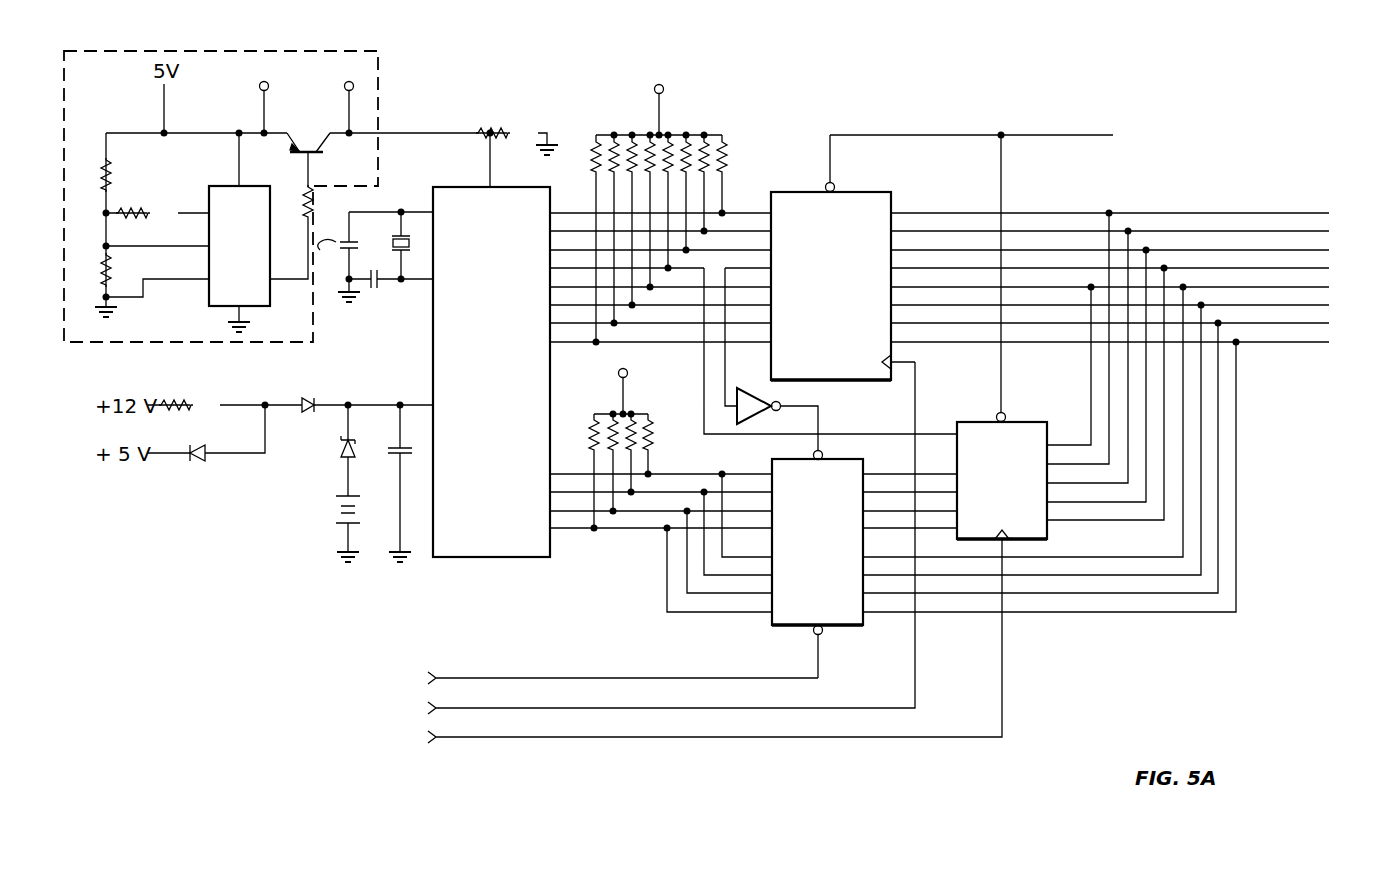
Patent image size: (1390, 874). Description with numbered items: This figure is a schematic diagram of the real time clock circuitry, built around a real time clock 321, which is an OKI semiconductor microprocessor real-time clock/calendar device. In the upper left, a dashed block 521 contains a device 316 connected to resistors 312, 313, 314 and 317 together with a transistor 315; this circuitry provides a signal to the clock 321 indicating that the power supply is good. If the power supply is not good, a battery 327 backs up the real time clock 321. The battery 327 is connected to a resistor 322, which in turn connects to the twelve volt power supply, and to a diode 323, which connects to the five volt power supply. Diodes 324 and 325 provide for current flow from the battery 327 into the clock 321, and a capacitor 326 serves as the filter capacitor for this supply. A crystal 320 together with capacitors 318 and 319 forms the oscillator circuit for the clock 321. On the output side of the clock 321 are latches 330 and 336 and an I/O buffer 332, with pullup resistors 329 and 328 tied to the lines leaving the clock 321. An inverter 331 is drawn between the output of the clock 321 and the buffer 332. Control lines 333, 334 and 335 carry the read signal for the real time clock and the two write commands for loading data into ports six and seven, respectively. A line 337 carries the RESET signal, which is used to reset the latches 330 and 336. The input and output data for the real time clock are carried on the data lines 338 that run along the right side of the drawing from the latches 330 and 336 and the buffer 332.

The resistor 312 is at (111, 178).
The resistor 313 is at (154, 209).
The resistor 314 is at (109, 268).
The transistor 315 is at (310, 154).
The device 316 is at (239, 259).
The resistor 317 is at (537, 133).
The capacitor 318 is at (310, 232).
The capacitor 319 is at (376, 290).
The crystal 320 is at (390, 240).
The real time clock 321 is at (491, 372).
The resistor 322 is at (205, 403).
The diode 323 is at (201, 450).
The diode 324 is at (309, 402).
The diode 325 is at (338, 458).
The filter capacitor 326 is at (388, 453).
The battery 327 is at (332, 520).
The pullup resistors 328 is at (656, 416).
The pullup resistors 329 is at (732, 138).
The latch 330 is at (843, 257).
The inverter 331 is at (751, 386).
The I/O buffer 332 is at (817, 565).
The control line 333 is at (602, 679).
The control line 334 is at (650, 541).
The control line 335 is at (694, 644).
The latch 336 is at (1002, 476).
The line 337 is at (1113, 135).
The data lines 338 is at (1335, 202).
The block 521 is at (130, 344).